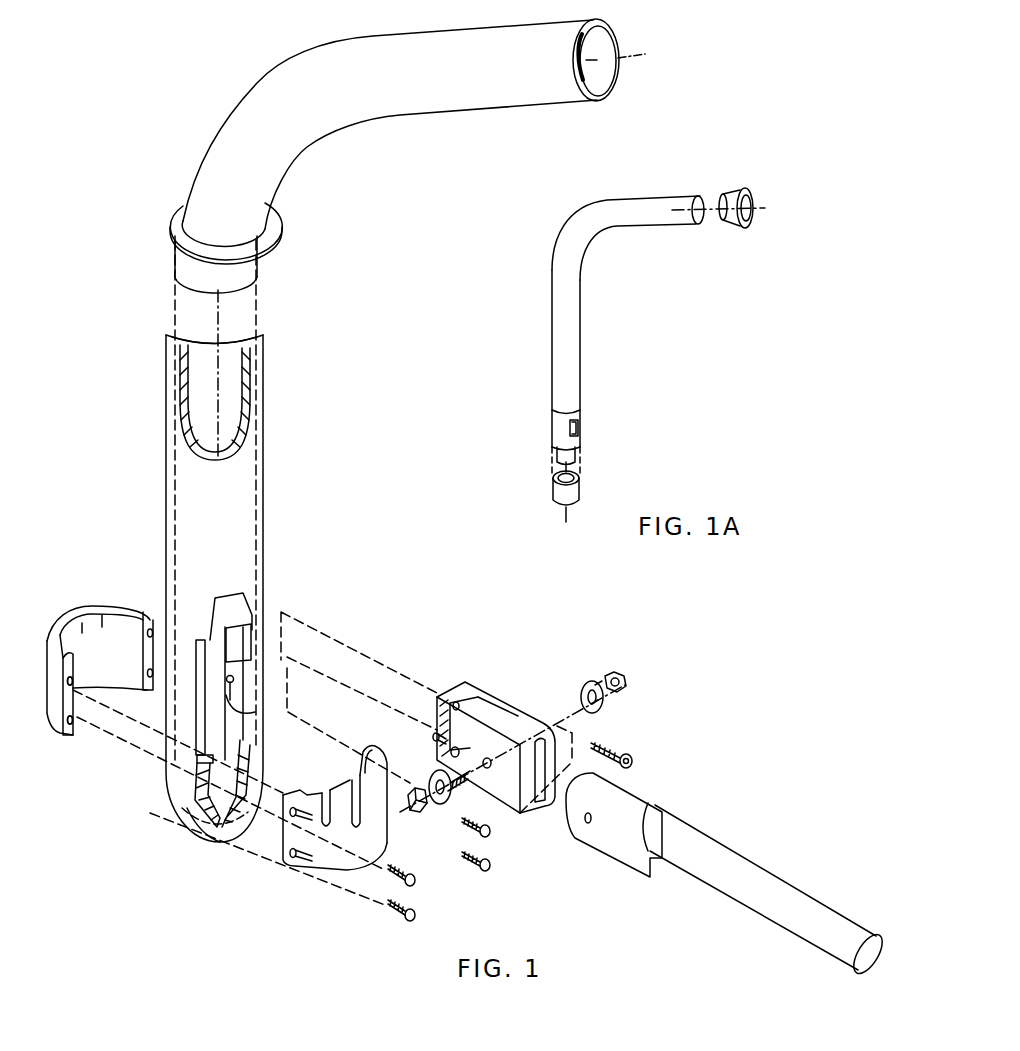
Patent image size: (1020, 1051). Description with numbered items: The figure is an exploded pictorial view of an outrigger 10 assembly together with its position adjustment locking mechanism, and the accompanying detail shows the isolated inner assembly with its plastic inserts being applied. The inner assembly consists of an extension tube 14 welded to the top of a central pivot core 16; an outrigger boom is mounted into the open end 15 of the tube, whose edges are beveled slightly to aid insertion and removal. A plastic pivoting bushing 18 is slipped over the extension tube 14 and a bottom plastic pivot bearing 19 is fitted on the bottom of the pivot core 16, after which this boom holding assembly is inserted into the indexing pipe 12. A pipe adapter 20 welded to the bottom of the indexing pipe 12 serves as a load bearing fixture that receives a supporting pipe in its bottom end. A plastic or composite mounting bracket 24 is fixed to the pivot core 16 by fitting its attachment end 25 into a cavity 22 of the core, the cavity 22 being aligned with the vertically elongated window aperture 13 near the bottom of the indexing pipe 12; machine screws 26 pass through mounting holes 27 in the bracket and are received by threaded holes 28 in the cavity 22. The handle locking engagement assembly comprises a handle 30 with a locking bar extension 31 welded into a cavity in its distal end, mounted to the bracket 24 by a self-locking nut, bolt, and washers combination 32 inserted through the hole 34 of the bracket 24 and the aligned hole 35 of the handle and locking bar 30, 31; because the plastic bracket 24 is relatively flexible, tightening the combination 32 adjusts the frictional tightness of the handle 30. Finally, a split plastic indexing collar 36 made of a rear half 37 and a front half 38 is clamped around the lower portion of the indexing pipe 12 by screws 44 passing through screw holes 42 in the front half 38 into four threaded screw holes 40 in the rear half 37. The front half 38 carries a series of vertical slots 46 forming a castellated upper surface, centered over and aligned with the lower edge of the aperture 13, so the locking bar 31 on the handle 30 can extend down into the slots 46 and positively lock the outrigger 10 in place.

In FIG. 1, the outrigger 10 is at (146, 305).
In FIG. 1, the indexing pipe 12 is at (265, 465).
In FIG. 1, the vertically elongated window aperture 13 is at (212, 655).
In FIG. 1, the extension tube 14 is at (323, 123).
In FIG. 1A, the extension tube 14 is at (562, 238).
In FIG. 1, the open end 15 is at (600, 43).
In FIG. 1, the central pivot core 16 is at (258, 590).
In FIG. 1A, the central pivot core 16 is at (550, 427).
In FIG. 1, the plastic pivoting bushing 18 is at (177, 198).
In FIG. 1A, the plastic pivoting bushing 18 is at (723, 226).
In FIG. 1A, the bottom plastic pivot bearing 19 is at (582, 487).
In FIG. 1, the pipe adapter 20 is at (187, 808).
In FIG. 1, the cavity 22 is at (277, 597).
In FIG. 1A, the cavity 22 is at (580, 427).
In FIG. 1, the mounting bracket 24 is at (507, 710).
In FIG. 1, the attachment end 25 is at (453, 686).
In FIG. 1, the machine screws 26 is at (433, 738).
In FIG. 1, the mounting holes 27 is at (458, 700).
In FIG. 1, the threaded holes 28 is at (234, 679).
In FIG. 1, the handle 30 is at (643, 793).
In FIG. 1, the locking bar extension 31 is at (632, 855).
In FIG. 1, the self-locking nut, bolt, and washers combination 32 is at (626, 680).
In FIG. 1, the hole 34 is at (485, 768).
In FIG. 1, the hole 35 is at (592, 817).
In FIG. 1, the indexing collar 36 is at (287, 870).
In FIG. 1, the rear half 37 is at (93, 607).
In FIG. 1, the front half 38 is at (320, 873).
In FIG. 1, the threaded screw holes 40 is at (82, 710).
In FIG. 1, the screw holes 42 is at (290, 852).
In FIG. 1, the screws 44 is at (477, 862).
In FIG. 1, the vertical slots 46 is at (360, 800).